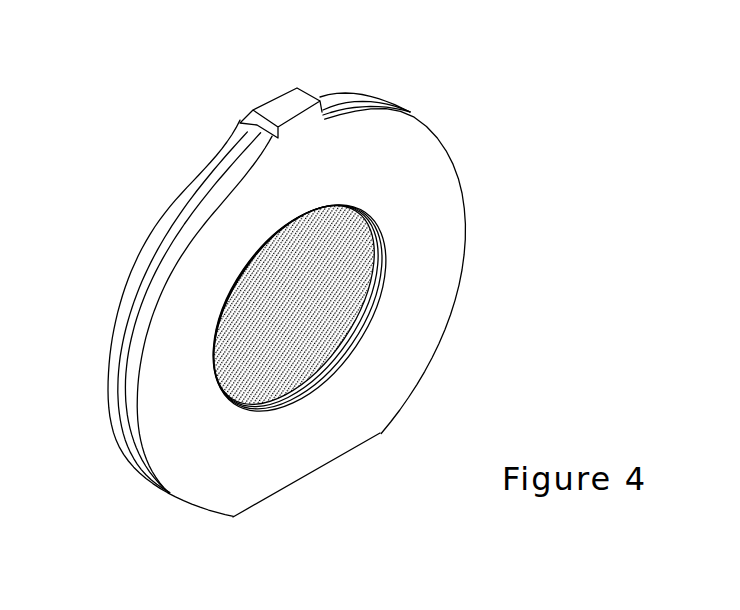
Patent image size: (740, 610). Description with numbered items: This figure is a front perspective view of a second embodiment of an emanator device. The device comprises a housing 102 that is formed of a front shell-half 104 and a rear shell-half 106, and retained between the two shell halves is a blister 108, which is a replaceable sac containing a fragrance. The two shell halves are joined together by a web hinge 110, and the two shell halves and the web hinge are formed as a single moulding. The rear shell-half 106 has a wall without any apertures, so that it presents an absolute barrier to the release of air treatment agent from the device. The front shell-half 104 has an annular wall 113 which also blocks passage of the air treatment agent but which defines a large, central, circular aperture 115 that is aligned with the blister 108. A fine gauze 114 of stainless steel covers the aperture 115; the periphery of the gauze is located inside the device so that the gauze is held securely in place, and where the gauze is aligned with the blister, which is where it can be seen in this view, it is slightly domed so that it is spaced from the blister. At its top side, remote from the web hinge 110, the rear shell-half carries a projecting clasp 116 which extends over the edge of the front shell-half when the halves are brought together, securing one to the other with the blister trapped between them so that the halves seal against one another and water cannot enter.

The housing 102 is at (309, 292).
The front shell-half 104 is at (175, 438).
The rear shell-half 106 is at (142, 270).
The blister 108 is at (327, 340).
The web hinge 110 is at (327, 470).
The annular wall 113 is at (430, 252).
The gauze 114 is at (265, 392).
The aperture 115 is at (380, 230).
The clasp 116 is at (285, 100).